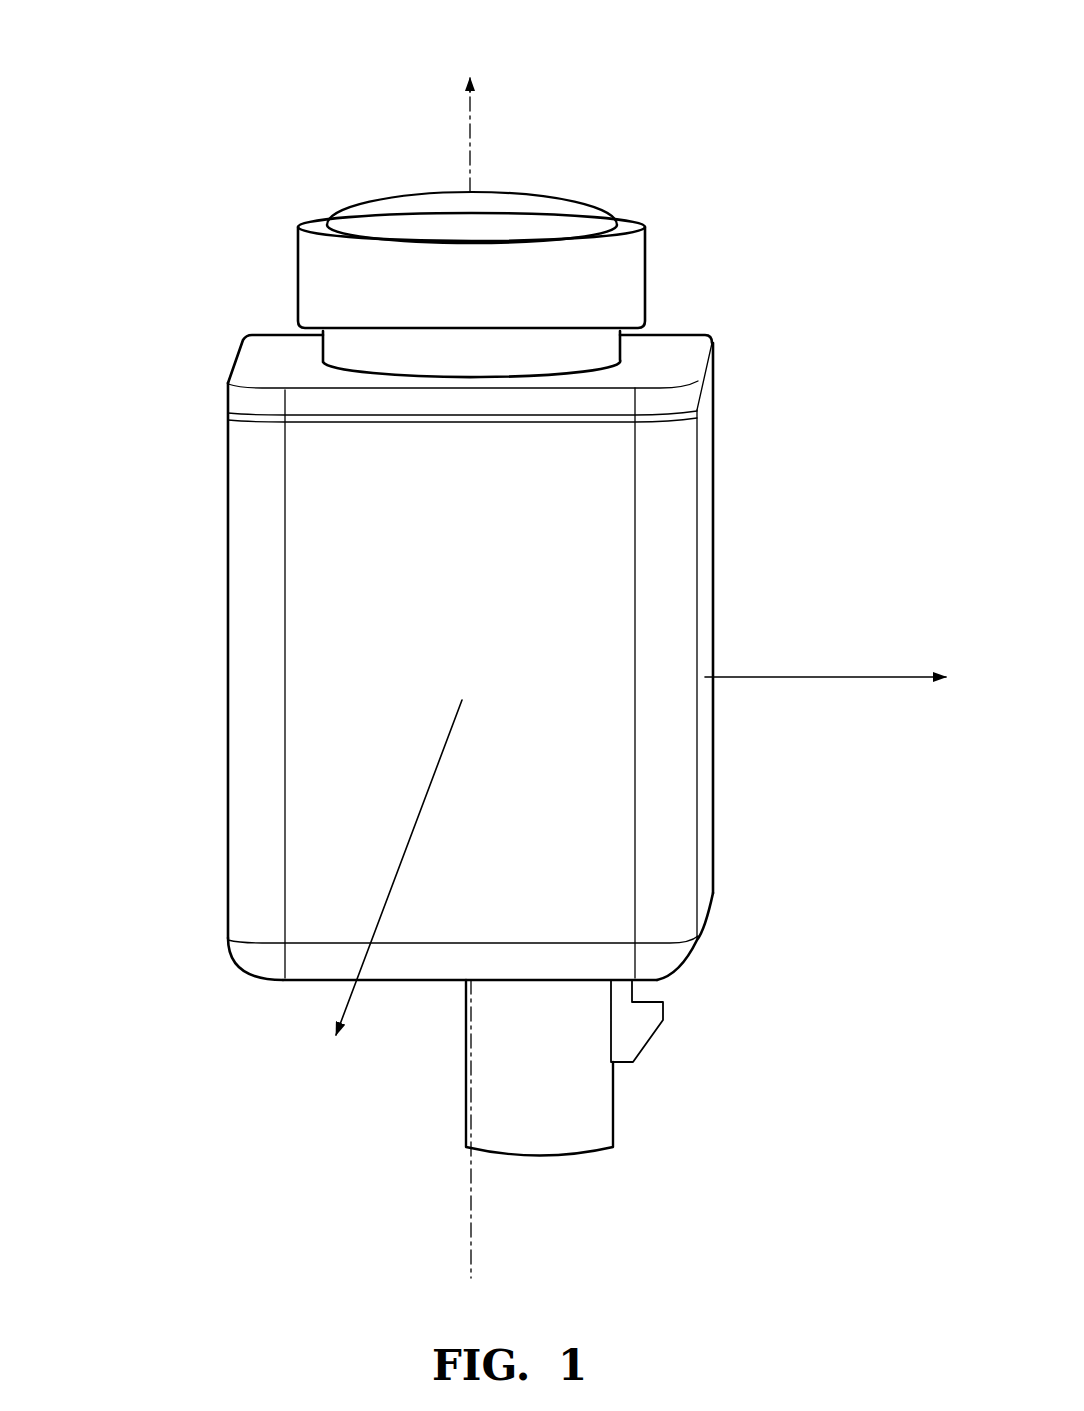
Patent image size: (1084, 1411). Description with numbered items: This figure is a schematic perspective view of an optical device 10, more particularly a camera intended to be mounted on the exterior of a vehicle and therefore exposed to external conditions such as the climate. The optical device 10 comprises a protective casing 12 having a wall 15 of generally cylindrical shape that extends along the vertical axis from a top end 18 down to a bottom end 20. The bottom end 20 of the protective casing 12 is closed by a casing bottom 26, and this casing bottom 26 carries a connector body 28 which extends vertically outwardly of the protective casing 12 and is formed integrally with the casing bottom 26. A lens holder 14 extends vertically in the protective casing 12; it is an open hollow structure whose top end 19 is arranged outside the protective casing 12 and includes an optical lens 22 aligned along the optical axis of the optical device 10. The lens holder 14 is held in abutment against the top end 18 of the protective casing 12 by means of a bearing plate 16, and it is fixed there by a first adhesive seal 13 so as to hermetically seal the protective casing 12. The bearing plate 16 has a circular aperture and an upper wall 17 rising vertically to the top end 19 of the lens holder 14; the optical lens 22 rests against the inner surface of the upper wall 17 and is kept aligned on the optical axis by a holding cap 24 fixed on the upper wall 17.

The optical device 10 is at (706, 54).
The protective casing 12 is at (175, 816).
The first adhesive seal 13 is at (675, 423).
The lens holder 14 is at (710, 300).
The wall 15 is at (705, 632).
The bearing plate 16 is at (694, 368).
The upper wall 17 is at (333, 354).
The top end 18 is at (226, 418).
The top end 19 is at (654, 201).
The bottom end 20 is at (235, 964).
The optical lens 22 is at (534, 165).
The holding cap 24 is at (278, 266).
The casing bottom 26 is at (285, 1010).
The connector body 28 is at (640, 1111).